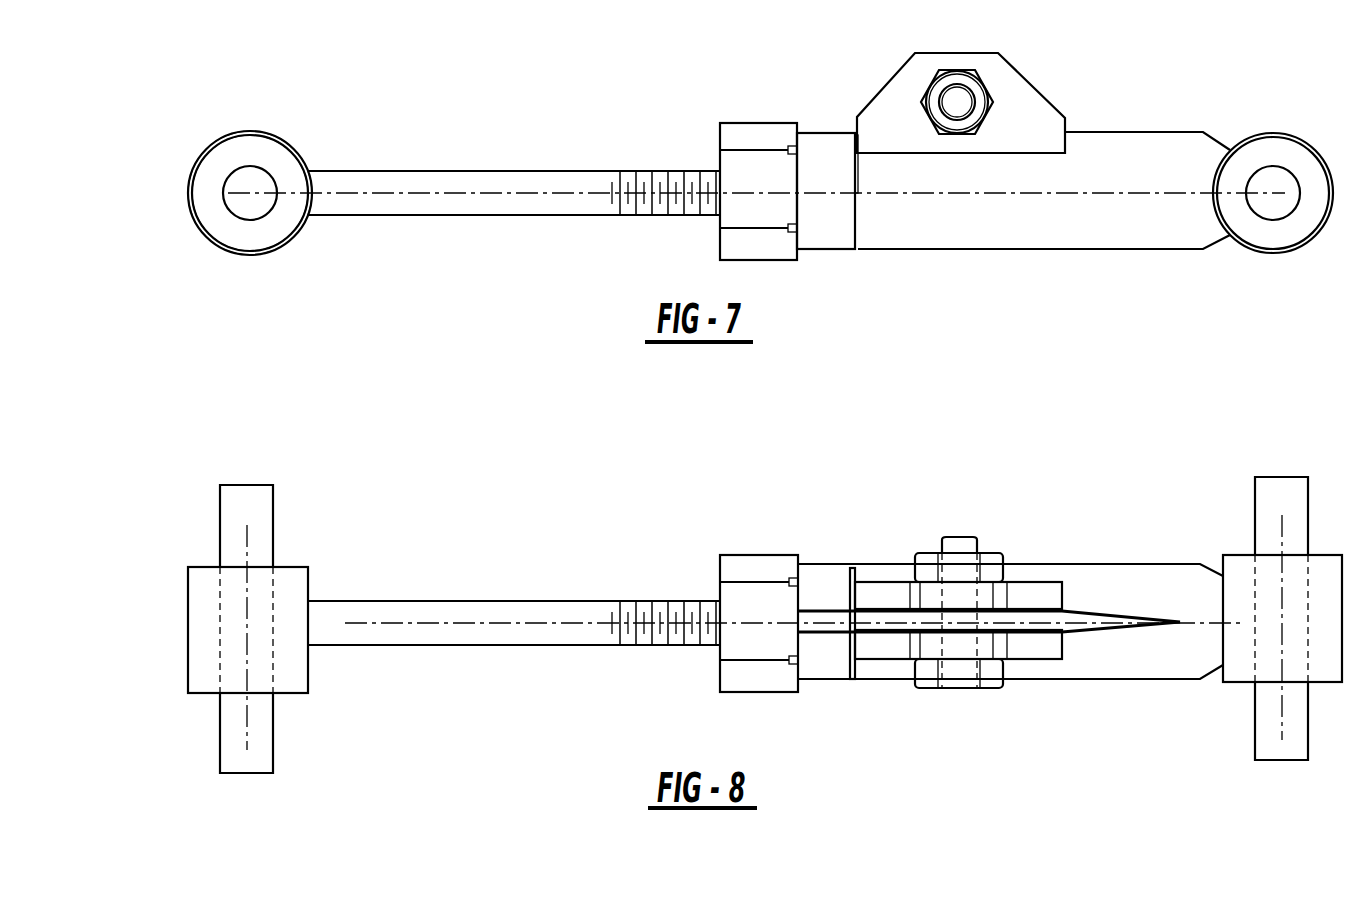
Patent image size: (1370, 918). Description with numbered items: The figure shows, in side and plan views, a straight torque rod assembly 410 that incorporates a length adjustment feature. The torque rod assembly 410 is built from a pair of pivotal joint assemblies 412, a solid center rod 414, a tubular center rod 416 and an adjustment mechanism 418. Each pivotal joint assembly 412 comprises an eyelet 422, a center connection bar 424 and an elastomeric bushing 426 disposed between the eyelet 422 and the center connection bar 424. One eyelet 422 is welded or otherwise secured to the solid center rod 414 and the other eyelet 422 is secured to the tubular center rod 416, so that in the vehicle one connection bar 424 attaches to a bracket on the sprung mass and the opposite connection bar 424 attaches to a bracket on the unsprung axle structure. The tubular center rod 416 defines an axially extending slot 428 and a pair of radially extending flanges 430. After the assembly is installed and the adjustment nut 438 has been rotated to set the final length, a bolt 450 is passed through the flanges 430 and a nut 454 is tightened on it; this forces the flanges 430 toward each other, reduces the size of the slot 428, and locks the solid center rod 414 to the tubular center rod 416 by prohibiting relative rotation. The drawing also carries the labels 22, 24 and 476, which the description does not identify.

In FIG. 7, the pivot connection 22 is at (1240, 132).
In FIG. 7, the pivot aperture 24 is at (1284, 181).
In FIG. 7, the torque rod assembly 410 is at (1093, 20).
In FIG. 8, the torque rod assembly 410 is at (972, 495).
In FIG. 7, the pivotal joint assembly 412 is at (268, 237).
In FIG. 8, the pivotal joint assembly 412 is at (303, 510).
In FIG. 7, the solid center rod 414 is at (456, 207).
In FIG. 8, the solid center rod 414 is at (443, 646).
In FIG. 7, the tubular center rod 416 is at (940, 232).
In FIG. 8, the tubular center rod 416 is at (1142, 667).
In FIG. 7, the adjustment mechanism 418 is at (788, 105).
In FIG. 8, the adjustment mechanism 418 is at (797, 527).
In FIG. 7, the eyelet 422 is at (204, 160).
In FIG. 8, the eyelet 422 is at (190, 600).
In FIG. 7, the center connection bar 424 is at (235, 203).
In FIG. 8, the center connection bar 424 is at (234, 748).
In FIG. 7, the elastomeric bushing 426 is at (266, 147).
In FIG. 8, the elastomeric bushing 426 is at (205, 645).
In FIG. 8, the axially extending slot 428 is at (1123, 613).
In FIG. 7, the radially extending flange 430 is at (1038, 112).
In FIG. 8, the radially extending flange 430 is at (875, 674).
In FIG. 7, the adjustment nut 438 is at (762, 250).
In FIG. 8, the adjustment nut 438 is at (754, 675).
In FIG. 8, the bolt 450 is at (960, 688).
In FIG. 8, the nut 454 is at (990, 567).
In FIG. 7, the ring 476 is at (1300, 230).